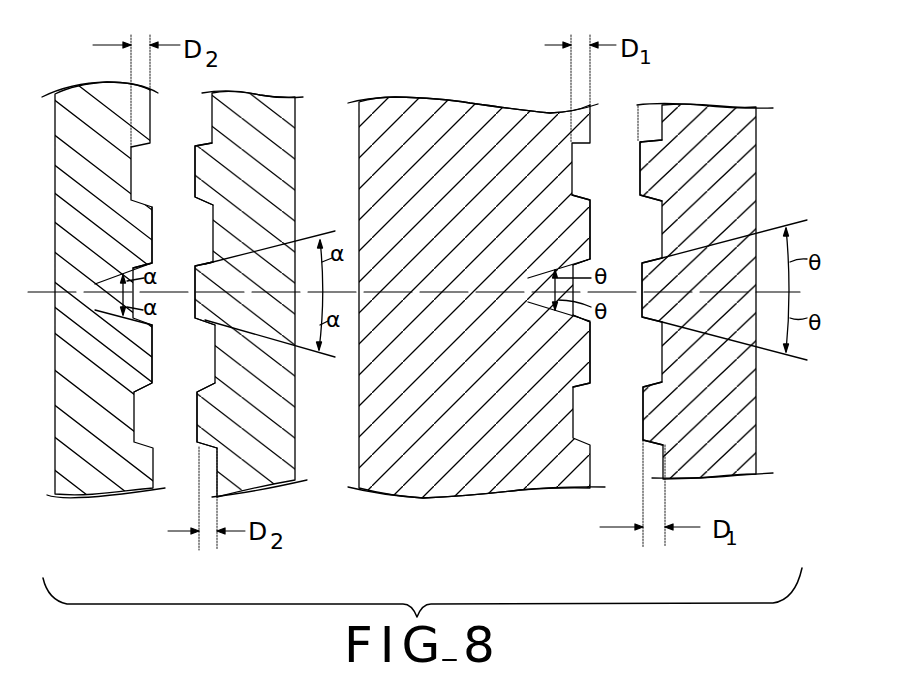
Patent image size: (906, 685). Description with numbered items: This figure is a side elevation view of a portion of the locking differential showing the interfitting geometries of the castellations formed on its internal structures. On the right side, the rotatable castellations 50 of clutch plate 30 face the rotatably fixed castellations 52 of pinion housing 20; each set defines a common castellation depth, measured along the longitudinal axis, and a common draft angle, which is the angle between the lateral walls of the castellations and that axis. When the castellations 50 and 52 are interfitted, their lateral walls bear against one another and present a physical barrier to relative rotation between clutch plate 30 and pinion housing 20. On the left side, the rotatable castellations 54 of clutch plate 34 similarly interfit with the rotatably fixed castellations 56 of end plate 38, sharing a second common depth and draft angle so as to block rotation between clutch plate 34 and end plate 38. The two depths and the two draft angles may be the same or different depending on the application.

The pinion housing 20 is at (467, 483).
The clutch plate 30 is at (723, 468).
The clutch plate 34 is at (275, 467).
The end plate 38 is at (103, 492).
The rotatable castellations 50 is at (640, 162).
The rotatably fixed castellations 52 is at (592, 206).
The rotatable castellations 54 is at (197, 165).
The rotatably fixed castellations 56 is at (149, 219).